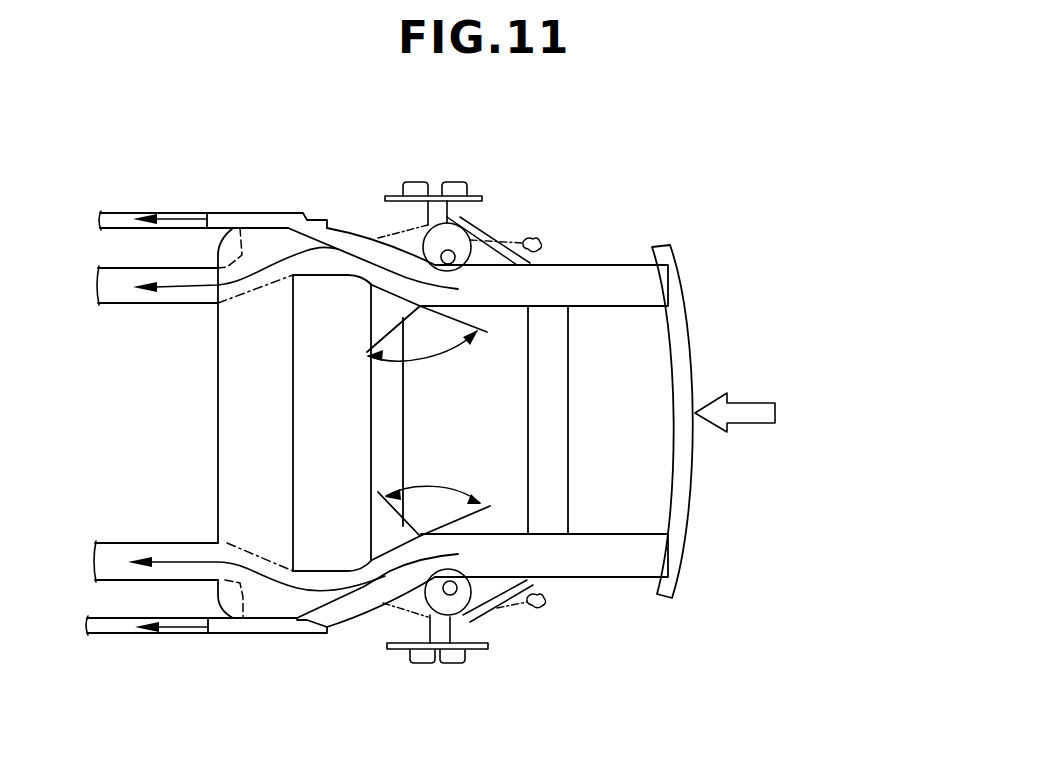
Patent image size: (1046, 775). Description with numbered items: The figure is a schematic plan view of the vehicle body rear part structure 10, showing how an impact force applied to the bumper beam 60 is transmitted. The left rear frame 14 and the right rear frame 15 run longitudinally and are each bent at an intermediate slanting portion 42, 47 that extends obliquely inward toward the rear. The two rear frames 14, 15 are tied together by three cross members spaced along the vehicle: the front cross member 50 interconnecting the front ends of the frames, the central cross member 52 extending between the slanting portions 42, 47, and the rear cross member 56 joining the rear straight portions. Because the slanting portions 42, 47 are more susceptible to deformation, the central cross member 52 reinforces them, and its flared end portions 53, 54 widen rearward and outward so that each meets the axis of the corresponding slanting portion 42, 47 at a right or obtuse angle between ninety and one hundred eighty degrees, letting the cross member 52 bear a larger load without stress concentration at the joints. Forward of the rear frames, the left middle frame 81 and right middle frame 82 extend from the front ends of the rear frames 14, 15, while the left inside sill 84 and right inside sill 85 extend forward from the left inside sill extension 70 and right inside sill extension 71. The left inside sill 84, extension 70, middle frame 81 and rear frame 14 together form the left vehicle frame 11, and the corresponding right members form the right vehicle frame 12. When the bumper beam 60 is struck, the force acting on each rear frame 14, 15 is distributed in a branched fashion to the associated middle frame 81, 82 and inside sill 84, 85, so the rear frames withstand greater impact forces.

The vehicle body rear part structure 10 is at (557, 168).
The left vehicle frame 11 is at (358, 618).
The right vehicle frame 12 is at (352, 230).
The left rear frame 14 is at (580, 563).
The right rear frame 15 is at (597, 274).
The intermediate slanting portion 42 is at (380, 598).
The intermediate slanting portion 47 is at (377, 253).
The front cross member 50 is at (240, 405).
The central cross member 52 is at (380, 410).
The flared end portion 53 is at (372, 539).
The flared end portion 54 is at (405, 298).
The rear cross member 56 is at (563, 396).
The bumper beam 60 is at (684, 473).
The left inside sill extension 70 is at (280, 633).
The right inside sill extension 71 is at (263, 213).
The left middle frame 81 is at (118, 545).
The right middle frame 82 is at (120, 290).
The left inside sill 84 is at (118, 628).
The right inside sill 85 is at (176, 213).